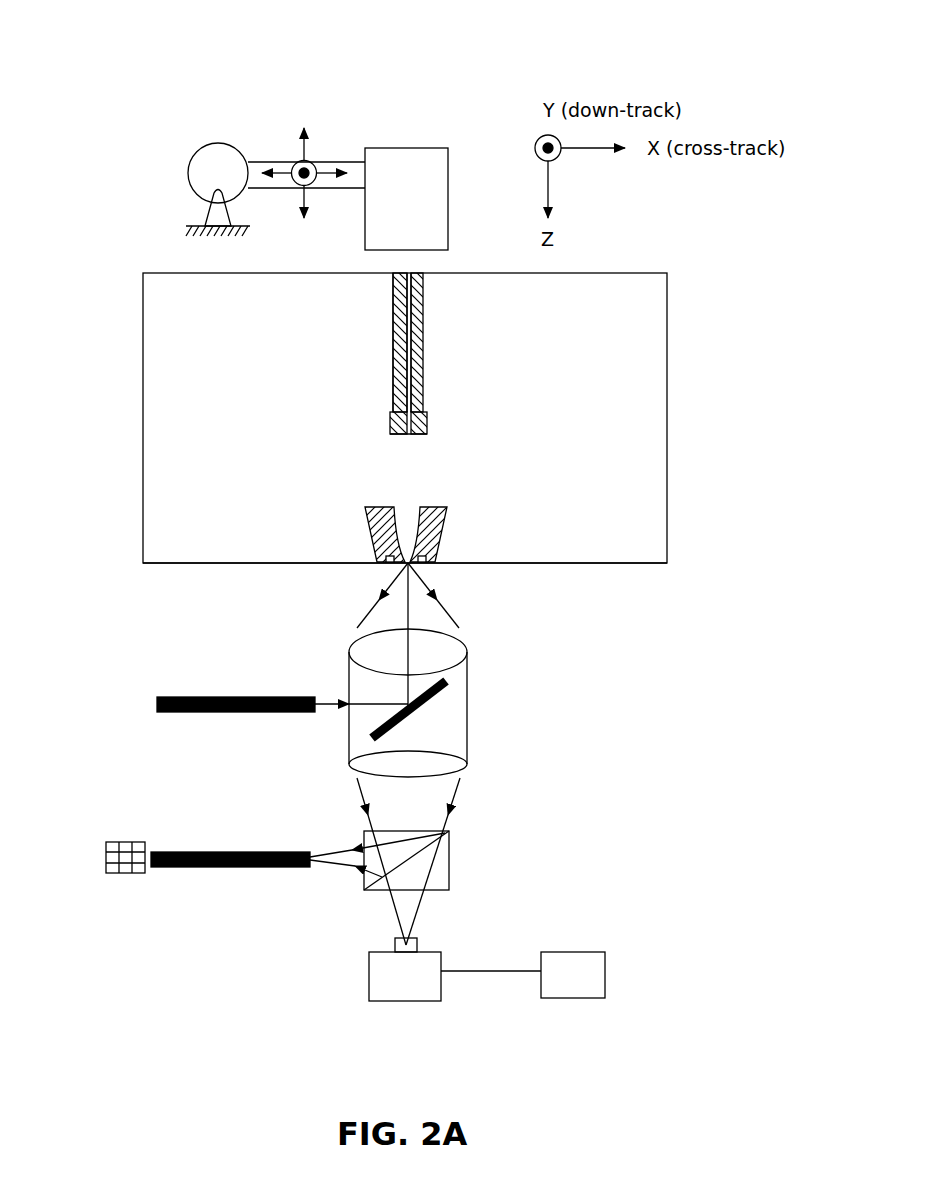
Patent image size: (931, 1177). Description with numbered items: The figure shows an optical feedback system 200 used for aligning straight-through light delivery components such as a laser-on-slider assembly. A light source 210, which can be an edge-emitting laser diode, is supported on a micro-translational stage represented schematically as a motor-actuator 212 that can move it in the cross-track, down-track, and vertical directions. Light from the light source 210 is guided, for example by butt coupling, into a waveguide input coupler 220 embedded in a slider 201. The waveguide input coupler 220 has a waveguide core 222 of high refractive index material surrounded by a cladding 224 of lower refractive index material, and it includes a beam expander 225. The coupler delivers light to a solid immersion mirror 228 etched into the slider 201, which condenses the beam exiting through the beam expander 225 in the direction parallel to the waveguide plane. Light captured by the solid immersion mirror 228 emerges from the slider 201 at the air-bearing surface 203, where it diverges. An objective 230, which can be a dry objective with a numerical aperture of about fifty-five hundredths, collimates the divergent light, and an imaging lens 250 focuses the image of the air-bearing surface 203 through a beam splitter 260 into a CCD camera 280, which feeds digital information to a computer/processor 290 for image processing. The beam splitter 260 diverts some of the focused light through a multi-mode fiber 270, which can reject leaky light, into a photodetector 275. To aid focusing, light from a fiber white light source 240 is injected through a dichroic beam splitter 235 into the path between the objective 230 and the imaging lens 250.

The optical feedback system 200 is at (140, 45).
The slider 201 is at (143, 385).
The air-bearing surface 203 is at (607, 568).
The light source 210 is at (445, 148).
The motor-actuator 212 is at (190, 168).
The waveguide input coupler 220 is at (423, 345).
The waveguide core 222 is at (405, 318).
The cladding 224 is at (402, 380).
The beam expander 225 is at (427, 433).
The solid immersion mirror 228 is at (445, 530).
The objective 230 is at (467, 654).
The dichroic beam splitter 235 is at (420, 712).
The fiber white light source 240 is at (203, 697).
The imaging lens 250 is at (468, 764).
The beam splitter 260 is at (452, 858).
The multi-mode fiber 270 is at (247, 868).
The photodetector 275 is at (131, 842).
The CCD camera 280 is at (372, 972).
The computer/processor 290 is at (605, 975).